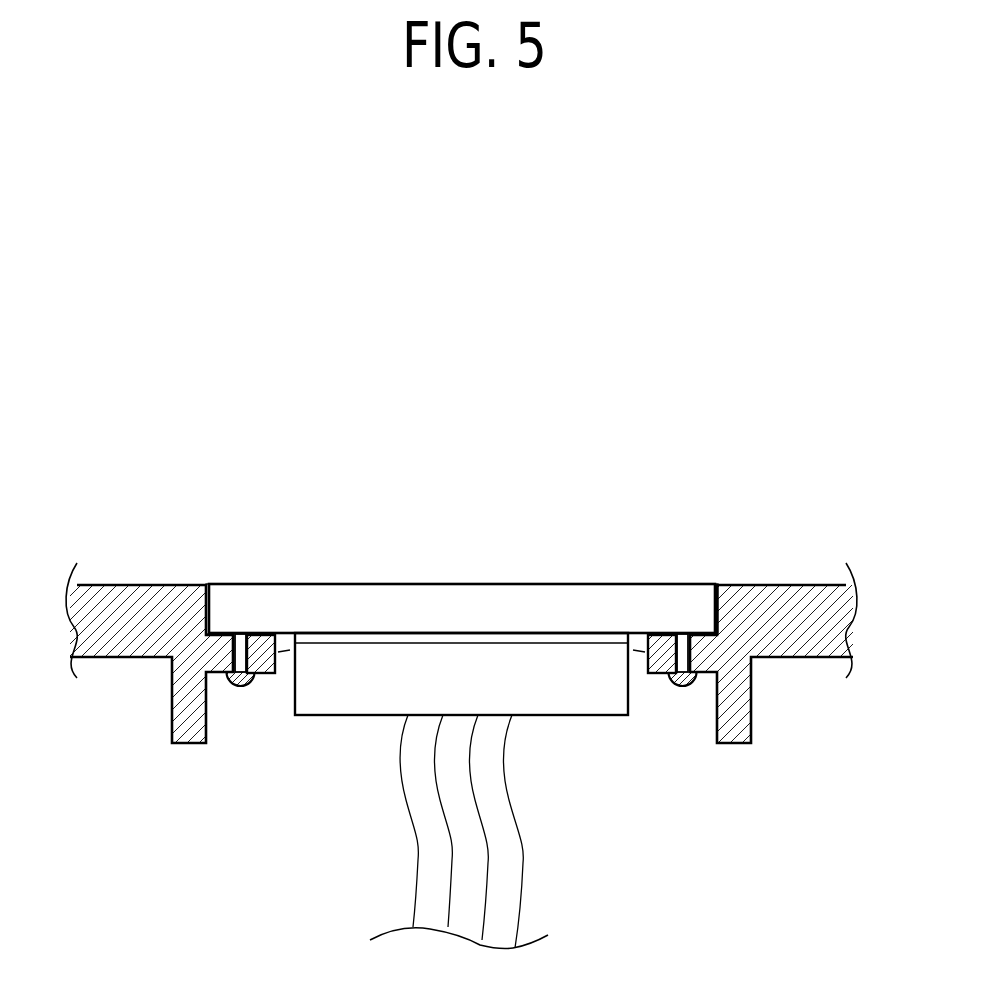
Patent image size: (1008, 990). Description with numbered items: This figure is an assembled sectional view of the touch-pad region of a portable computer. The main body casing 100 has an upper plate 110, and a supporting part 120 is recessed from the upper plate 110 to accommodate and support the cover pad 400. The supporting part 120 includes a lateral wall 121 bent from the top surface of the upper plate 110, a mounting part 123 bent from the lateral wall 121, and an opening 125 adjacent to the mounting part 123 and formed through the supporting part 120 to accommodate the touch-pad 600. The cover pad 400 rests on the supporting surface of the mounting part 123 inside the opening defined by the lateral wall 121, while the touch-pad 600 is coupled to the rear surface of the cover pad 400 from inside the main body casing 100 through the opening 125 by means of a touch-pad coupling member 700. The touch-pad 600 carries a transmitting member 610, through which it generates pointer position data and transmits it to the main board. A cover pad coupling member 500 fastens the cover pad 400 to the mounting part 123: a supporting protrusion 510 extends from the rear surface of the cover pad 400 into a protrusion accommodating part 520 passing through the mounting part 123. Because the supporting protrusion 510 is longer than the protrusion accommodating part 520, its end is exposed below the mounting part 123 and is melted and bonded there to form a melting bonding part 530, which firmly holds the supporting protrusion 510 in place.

The main body casing 100 is at (120, 647).
The upper plate 110 is at (118, 583).
The supporting part 120 is at (465, 559).
The lateral wall 121 is at (218, 583).
The mounting part 123 is at (262, 633).
The opening 125 is at (293, 648).
The cover pad 400 is at (402, 602).
The cover pad coupling member 500 is at (461, 750).
The supporting protrusion 510 is at (240, 688).
The protrusion accommodating part 520 is at (226, 678).
The melting bonding part 530 is at (250, 688).
The touch-pad 600 is at (543, 675).
The transmitting member 610 is at (437, 877).
The touch-pad coupling member 700 is at (464, 635).